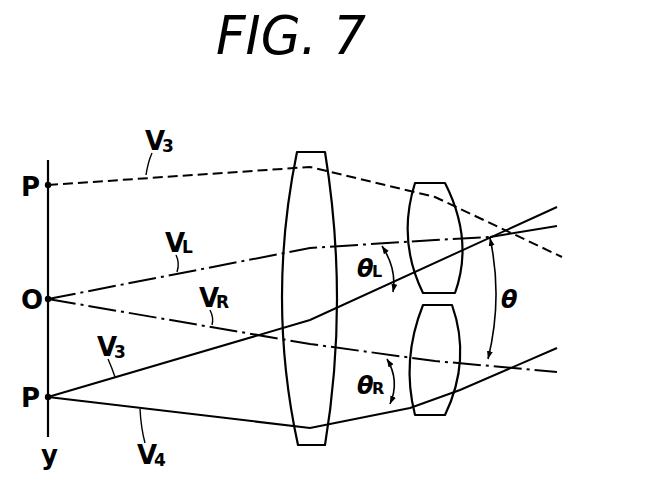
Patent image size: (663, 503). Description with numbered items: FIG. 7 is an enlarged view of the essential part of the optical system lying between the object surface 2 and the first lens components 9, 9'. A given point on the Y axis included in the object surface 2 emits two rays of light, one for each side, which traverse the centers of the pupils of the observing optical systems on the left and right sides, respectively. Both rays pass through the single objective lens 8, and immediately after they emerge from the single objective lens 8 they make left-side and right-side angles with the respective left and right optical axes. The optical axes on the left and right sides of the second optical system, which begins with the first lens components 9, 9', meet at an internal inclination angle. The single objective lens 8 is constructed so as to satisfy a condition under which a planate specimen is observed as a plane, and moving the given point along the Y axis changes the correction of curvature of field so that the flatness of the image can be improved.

The object surface 2 is at (49, 166).
The single objective lens 8 is at (315, 152).
The first lens component 9 is at (435, 213).
The first lens component 9' is at (438, 387).